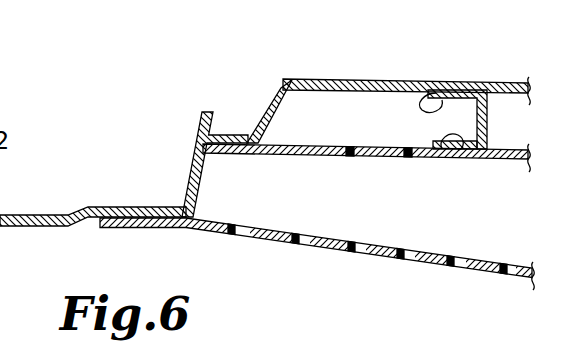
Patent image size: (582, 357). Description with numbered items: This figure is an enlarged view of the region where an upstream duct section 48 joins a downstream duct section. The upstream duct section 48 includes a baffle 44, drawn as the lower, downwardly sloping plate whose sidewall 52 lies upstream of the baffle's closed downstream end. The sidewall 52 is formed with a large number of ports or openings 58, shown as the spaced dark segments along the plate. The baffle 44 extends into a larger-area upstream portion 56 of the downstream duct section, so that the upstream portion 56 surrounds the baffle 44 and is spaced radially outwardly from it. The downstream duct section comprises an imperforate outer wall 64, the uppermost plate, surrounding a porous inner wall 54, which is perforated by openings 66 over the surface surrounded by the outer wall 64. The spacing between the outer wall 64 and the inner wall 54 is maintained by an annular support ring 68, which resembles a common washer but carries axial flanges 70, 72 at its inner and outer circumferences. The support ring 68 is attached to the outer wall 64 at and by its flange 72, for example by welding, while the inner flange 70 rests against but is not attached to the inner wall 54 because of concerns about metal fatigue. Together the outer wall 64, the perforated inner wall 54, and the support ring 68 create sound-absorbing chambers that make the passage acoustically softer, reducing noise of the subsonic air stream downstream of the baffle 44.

The baffle 44 is at (449, 242).
The upstream duct section 48 is at (96, 207).
The sidewall 52 is at (385, 262).
The inner wall 54 is at (323, 156).
The upstream portion 56 is at (214, 197).
The openings 58 is at (238, 238).
The outer wall 64 is at (338, 80).
The openings 66 is at (348, 157).
The support ring 68 is at (489, 121).
The inner flange 70 is at (442, 149).
The outer flange 72 is at (436, 93).